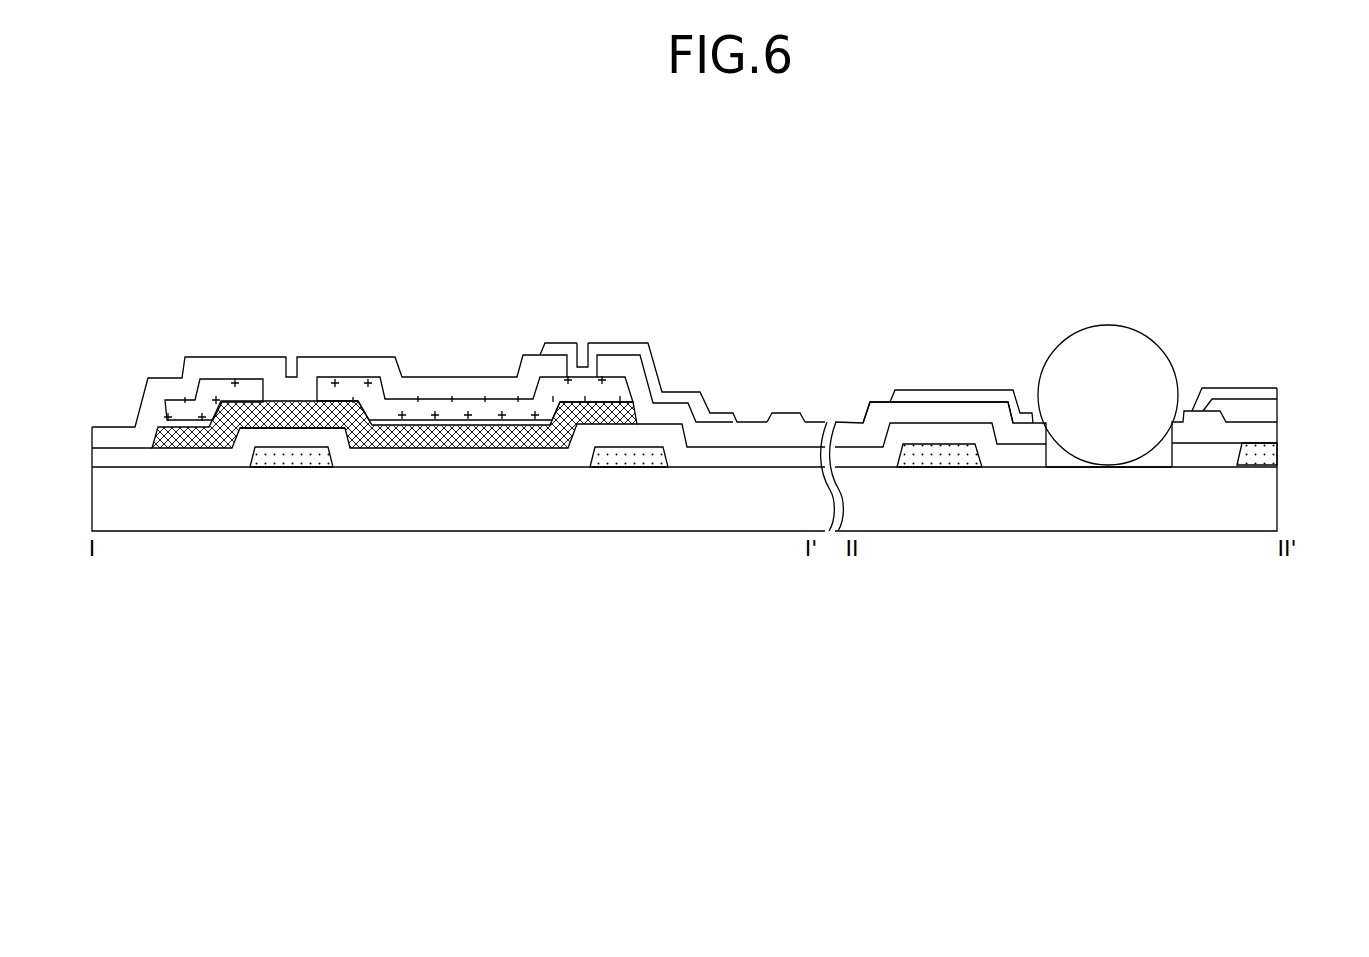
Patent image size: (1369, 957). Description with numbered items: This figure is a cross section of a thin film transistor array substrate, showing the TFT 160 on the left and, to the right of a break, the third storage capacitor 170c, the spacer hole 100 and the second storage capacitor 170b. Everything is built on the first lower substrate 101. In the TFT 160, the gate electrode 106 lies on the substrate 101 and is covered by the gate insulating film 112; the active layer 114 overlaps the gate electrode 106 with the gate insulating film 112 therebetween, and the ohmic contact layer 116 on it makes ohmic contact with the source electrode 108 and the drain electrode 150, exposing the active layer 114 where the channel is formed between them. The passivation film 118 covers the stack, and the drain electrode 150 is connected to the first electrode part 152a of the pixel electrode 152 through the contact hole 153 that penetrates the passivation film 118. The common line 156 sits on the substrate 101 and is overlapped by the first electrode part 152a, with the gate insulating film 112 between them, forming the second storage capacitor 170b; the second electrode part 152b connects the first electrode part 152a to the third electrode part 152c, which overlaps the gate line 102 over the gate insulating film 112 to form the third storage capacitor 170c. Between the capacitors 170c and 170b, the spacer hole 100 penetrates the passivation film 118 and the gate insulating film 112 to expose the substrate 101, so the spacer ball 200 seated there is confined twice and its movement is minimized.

The spacer hole 100 is at (1059, 457).
The first lower substrate 101 is at (1278, 492).
The gate line 102 is at (937, 455).
The gate electrode 106 is at (292, 472).
The source electrode 108 is at (238, 386).
The gate insulating film 112 is at (1278, 434).
The active layer 114 is at (373, 437).
The ohmic contact layer 116 is at (440, 440).
The passivation film 118 is at (1278, 412).
The drain electrode 150 is at (344, 386).
The pixel electrode 152 is at (946, 339).
The first electrode part 152a is at (629, 349).
The second electrode part 152b is at (788, 410).
The third electrode part 152c is at (988, 397).
The contact hole 153 is at (581, 356).
The common line 156 is at (625, 457).
The TFT 160 is at (397, 347).
The second storage capacitor 170b is at (1216, 384).
The third storage capacitor 170c is at (929, 384).
The spacer ball 200 is at (1108, 326).